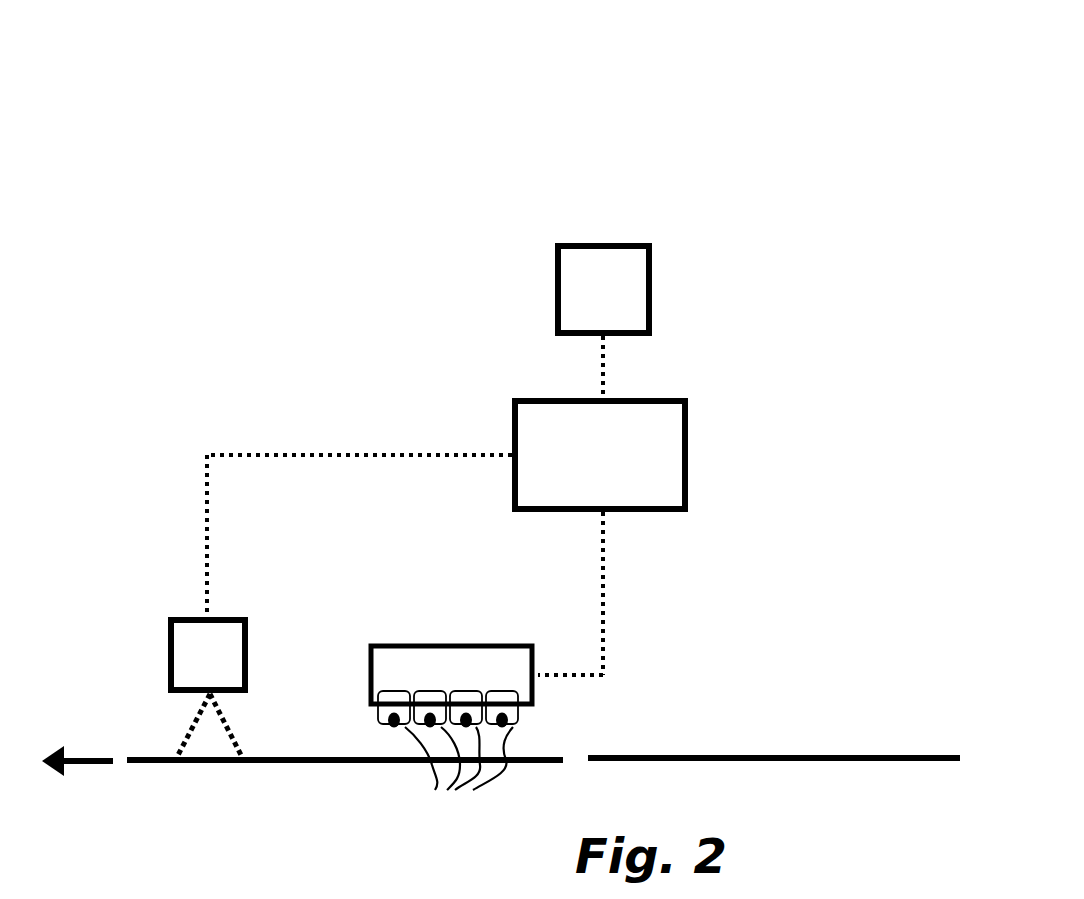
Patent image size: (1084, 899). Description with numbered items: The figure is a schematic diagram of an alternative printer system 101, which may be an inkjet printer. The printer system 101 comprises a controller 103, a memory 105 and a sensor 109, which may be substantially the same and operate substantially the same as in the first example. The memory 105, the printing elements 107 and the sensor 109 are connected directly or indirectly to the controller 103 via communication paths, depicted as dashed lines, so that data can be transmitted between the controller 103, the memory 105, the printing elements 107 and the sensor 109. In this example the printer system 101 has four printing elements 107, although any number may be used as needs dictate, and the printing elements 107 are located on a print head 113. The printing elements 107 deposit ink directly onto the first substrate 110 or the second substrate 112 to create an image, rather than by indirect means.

The printer system 101 is at (568, 83).
The controller 103 is at (688, 453).
The memory 105 is at (652, 311).
The printing elements 107 is at (450, 768).
The sensor 109 is at (248, 643).
The first substrate 110 is at (135, 757).
The second substrate 112 is at (793, 755).
The print head 113 is at (412, 644).